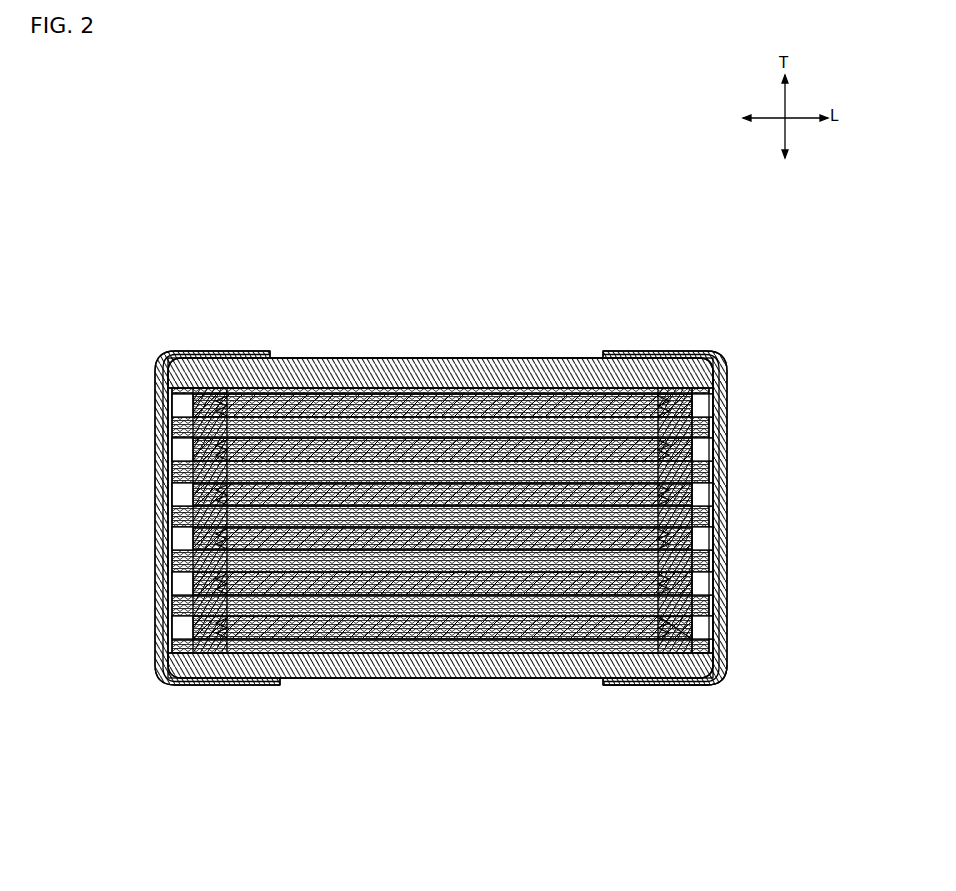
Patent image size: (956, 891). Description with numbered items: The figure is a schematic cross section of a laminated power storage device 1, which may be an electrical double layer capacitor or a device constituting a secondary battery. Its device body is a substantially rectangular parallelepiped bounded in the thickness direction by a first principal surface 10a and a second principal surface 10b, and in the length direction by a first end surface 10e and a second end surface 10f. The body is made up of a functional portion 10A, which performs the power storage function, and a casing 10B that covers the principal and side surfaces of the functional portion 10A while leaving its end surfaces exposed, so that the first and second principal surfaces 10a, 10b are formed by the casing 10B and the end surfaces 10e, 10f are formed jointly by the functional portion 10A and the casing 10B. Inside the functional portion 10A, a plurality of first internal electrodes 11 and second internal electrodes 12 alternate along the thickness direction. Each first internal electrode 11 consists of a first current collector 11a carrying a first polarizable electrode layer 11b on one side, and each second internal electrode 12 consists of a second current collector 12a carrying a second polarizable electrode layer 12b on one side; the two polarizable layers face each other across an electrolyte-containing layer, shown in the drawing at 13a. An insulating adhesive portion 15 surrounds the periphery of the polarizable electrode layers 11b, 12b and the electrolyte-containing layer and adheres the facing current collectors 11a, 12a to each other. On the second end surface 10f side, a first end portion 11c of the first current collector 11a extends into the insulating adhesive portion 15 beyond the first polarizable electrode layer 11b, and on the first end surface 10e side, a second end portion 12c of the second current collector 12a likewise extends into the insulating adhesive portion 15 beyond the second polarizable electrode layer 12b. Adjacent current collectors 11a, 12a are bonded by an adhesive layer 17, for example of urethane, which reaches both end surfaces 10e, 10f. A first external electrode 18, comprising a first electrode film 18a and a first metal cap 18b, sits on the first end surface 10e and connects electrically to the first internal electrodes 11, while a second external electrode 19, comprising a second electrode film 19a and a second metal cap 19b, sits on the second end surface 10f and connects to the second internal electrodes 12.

The laminated power storage device 1 is at (673, 266).
The first principal surface 10a is at (478, 378).
The second principal surface 10b is at (490, 678).
The functional portion 10A is at (635, 390).
The casing 10B is at (400, 683).
The first end surface 10e is at (160, 530).
The second end surface 10f is at (722, 537).
The first internal electrode 11 is at (345, 285).
The first current collector 11a is at (283, 430).
The first polarizable electrode layer 11b is at (345, 440).
The first end portion 11c is at (695, 665).
The second internal electrode 12 is at (643, 738).
The second current collector 12a is at (590, 650).
The second polarizable electrode layer 12b is at (615, 658).
The second end portion 12c is at (262, 690).
The dielectric layer 13a is at (458, 432).
The insulating adhesive portion 15 is at (724, 375).
The adhesive layer 17 is at (730, 600).
The first external electrode 18 is at (155, 568).
The first electrode film 18a is at (163, 440).
The first metal cap 18b is at (160, 480).
The second external electrode 19 is at (727, 468).
The second electrode film 19a is at (726, 413).
The second metal cap 19b is at (728, 443).